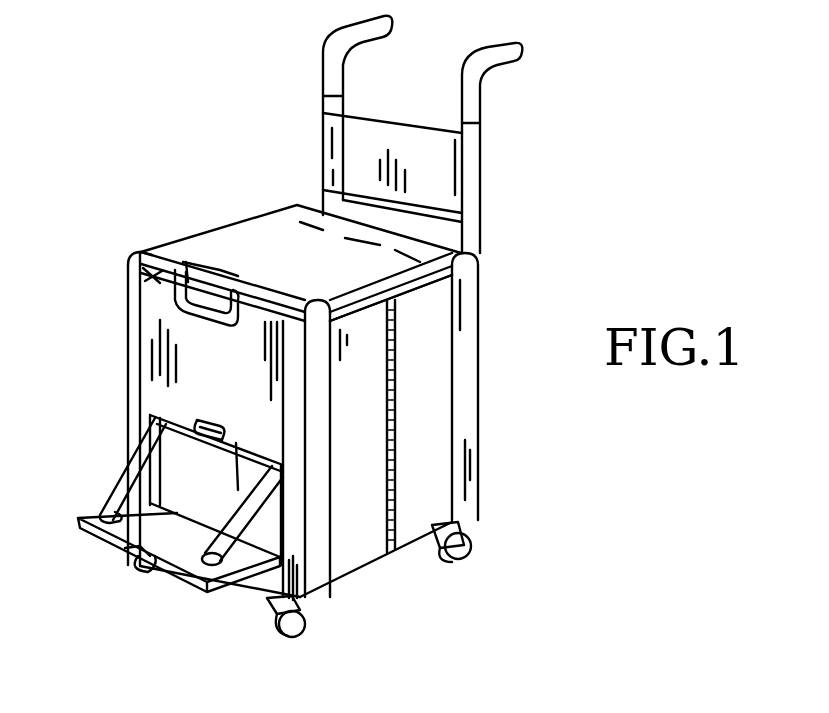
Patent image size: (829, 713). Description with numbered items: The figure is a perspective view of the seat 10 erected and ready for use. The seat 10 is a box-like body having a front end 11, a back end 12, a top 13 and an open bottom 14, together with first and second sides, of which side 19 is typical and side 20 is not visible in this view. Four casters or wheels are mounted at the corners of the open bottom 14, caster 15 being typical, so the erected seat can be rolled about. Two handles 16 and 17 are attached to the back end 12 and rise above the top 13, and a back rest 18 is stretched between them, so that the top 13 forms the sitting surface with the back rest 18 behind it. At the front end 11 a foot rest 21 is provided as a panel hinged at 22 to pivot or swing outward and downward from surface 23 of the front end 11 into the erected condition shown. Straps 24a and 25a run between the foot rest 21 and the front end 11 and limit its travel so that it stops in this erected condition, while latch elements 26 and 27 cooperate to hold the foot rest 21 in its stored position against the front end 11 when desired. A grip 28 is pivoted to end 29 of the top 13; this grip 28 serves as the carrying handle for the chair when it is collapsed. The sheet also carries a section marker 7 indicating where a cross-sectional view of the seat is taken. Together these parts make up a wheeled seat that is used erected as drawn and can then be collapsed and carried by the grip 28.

The section line 7- 7 is at (532, 42).
The seat 10 is at (480, 408).
The front end 11 is at (127, 356).
The back end 12 is at (470, 355).
The top 13 is at (247, 255).
The open bottom 14 is at (355, 563).
The caster 15 is at (472, 543).
The handle 16 is at (498, 68).
The handle 17 is at (370, 24).
The back rest 18 is at (430, 182).
The side 19 is at (425, 428).
The side 20 is at (157, 244).
The foot rest 21 is at (190, 557).
The hinge 22 is at (268, 567).
The surface 23 is at (138, 426).
The strap 24a is at (153, 469).
The strap 25a is at (325, 568).
The latch element 26 is at (192, 437).
The latch element 27 is at (130, 562).
The grip 28 is at (176, 313).
The end 29 is at (137, 270).